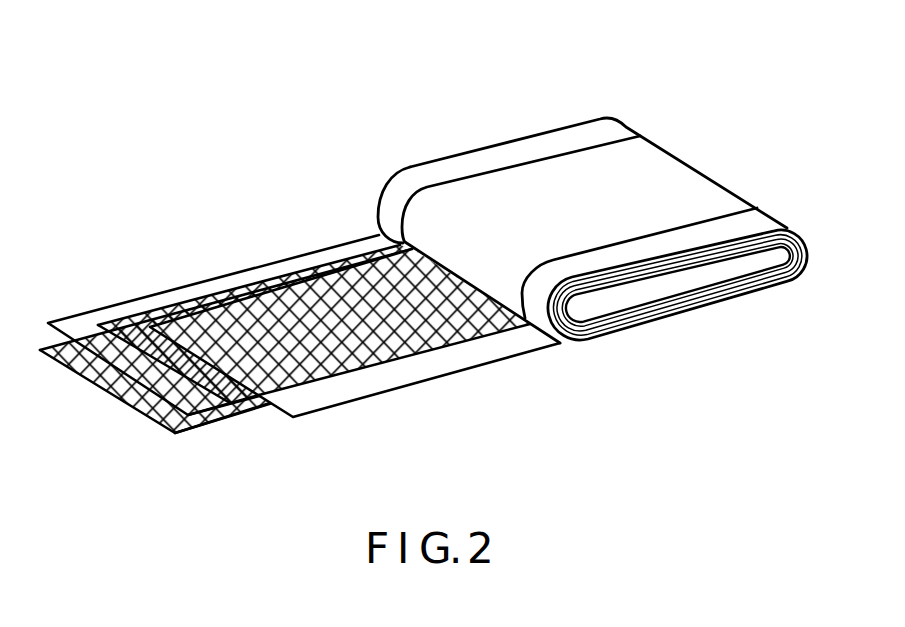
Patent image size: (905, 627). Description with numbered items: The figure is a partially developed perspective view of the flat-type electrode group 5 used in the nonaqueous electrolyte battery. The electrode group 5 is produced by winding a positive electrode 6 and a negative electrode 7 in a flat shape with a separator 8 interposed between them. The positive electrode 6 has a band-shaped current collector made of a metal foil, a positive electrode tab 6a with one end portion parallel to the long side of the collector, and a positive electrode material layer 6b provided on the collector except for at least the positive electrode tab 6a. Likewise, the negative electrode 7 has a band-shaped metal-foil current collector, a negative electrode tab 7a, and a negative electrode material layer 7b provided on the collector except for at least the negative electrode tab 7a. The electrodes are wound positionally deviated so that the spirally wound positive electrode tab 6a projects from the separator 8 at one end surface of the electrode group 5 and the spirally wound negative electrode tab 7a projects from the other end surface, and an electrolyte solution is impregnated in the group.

The electrode group 5 is at (594, 193).
The positive electrode 6 is at (285, 323).
The positive electrode tab 6a is at (562, 139).
The positive electrode material layer 6b is at (108, 347).
The negative electrode 7 is at (355, 348).
The negative electrode tab 7a is at (747, 221).
The negative electrode material layer 7b is at (370, 355).
The separator 8 is at (250, 396).